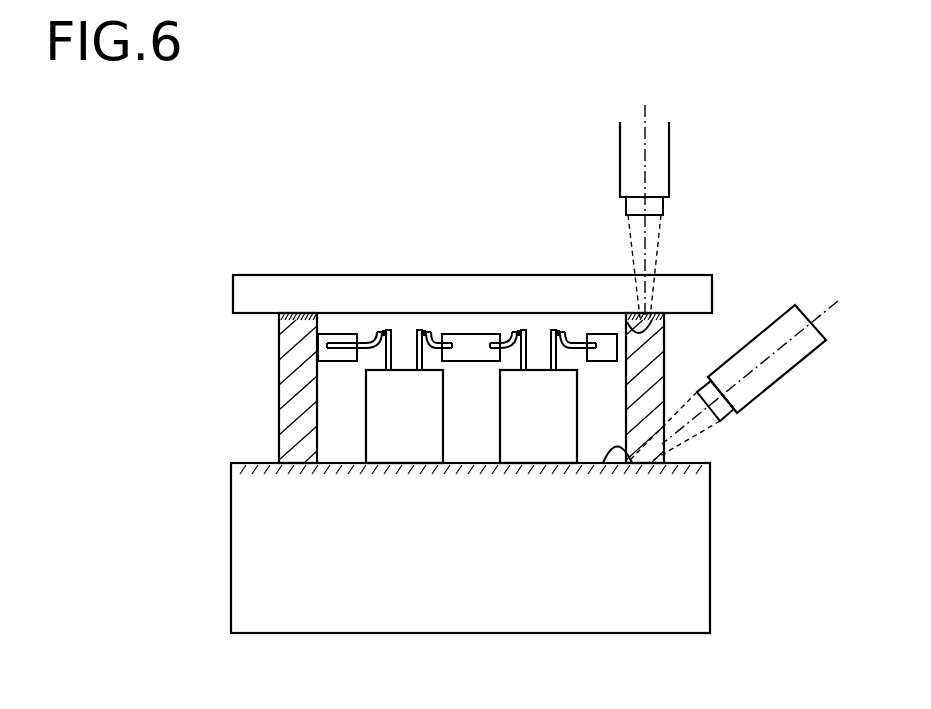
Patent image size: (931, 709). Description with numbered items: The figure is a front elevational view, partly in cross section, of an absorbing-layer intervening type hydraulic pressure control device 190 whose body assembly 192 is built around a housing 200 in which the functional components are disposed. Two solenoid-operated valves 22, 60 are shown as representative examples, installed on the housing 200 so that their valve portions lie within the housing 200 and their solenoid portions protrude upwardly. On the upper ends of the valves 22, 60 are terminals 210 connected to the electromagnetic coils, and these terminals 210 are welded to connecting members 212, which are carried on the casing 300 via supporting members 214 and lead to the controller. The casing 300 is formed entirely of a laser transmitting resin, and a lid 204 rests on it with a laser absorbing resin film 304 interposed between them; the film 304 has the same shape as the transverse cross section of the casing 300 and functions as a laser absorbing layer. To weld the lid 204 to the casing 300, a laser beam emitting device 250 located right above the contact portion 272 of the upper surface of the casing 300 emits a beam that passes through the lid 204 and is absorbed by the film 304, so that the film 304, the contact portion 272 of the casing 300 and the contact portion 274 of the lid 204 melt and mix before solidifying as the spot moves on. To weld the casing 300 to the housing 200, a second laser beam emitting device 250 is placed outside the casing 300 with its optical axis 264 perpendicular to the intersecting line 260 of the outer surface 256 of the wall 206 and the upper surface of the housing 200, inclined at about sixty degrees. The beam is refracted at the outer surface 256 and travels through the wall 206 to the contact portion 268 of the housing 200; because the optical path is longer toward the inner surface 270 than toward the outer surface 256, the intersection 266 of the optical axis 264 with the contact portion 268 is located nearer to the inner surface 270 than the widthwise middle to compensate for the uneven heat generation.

The battery pack assembly 190 is at (350, 156).
The body assembly 192 is at (210, 482).
The housing 200 is at (625, 641).
The lid 204 is at (265, 285).
The laser absorbing resin film 304 is at (278, 316).
The casing 300 is at (270, 389).
The outer surface 256 is at (666, 347).
The solenoid-operated valve 22 is at (397, 432).
The solenoid-operated valve 60 is at (523, 440).
The terminals 210 is at (418, 330).
The connecting members 212 is at (370, 337).
The supporting members 214 is at (333, 337).
The laser beam emitting device 250 is at (660, 130).
The contact portion 272 is at (637, 317).
The contact portion 274 is at (620, 317).
The optical axis 264 is at (813, 352).
The wall 206 is at (652, 415).
The intersecting line 260 is at (675, 451).
The intersection 266 is at (640, 470).
The contact portion 268 is at (605, 460).
The inner surface 270 is at (622, 400).